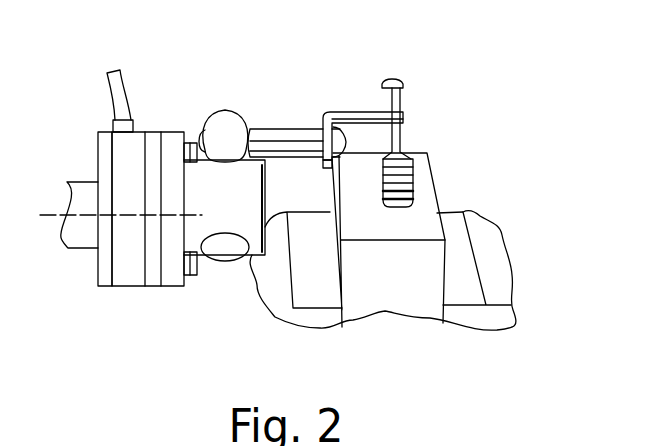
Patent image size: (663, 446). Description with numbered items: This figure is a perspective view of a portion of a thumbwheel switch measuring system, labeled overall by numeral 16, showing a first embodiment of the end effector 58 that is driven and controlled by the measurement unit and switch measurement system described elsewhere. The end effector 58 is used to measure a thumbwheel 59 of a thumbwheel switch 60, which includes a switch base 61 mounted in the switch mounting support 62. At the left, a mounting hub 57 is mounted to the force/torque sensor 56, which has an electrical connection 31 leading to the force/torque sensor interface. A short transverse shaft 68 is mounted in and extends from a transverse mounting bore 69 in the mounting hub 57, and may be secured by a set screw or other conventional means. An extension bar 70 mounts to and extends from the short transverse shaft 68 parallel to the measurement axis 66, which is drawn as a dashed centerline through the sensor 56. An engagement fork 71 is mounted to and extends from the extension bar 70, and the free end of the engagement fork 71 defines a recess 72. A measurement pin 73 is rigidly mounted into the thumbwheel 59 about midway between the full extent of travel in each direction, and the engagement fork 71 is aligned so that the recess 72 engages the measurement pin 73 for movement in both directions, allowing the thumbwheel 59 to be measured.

The grinding apparatus 16 is at (608, 445).
The electrical connection 31 is at (110, 105).
The force/torque sensor 56 is at (125, 287).
The mounting hub 57 is at (180, 288).
The end effector 58 is at (202, 265).
The thumbwheel 59 is at (415, 178).
The thumbwheel switch 60 is at (442, 195).
The switch base 61 is at (390, 315).
The switch mounting support 62 is at (520, 284).
The measurement axis 66 is at (48, 215).
The short transverse shaft 68 is at (225, 112).
The transverse mounting bore 69 is at (248, 261).
The extension bar 70 is at (283, 128).
The engagement fork 71 is at (358, 108).
The recess 72 is at (408, 115).
The measurement pin 73 is at (403, 78).